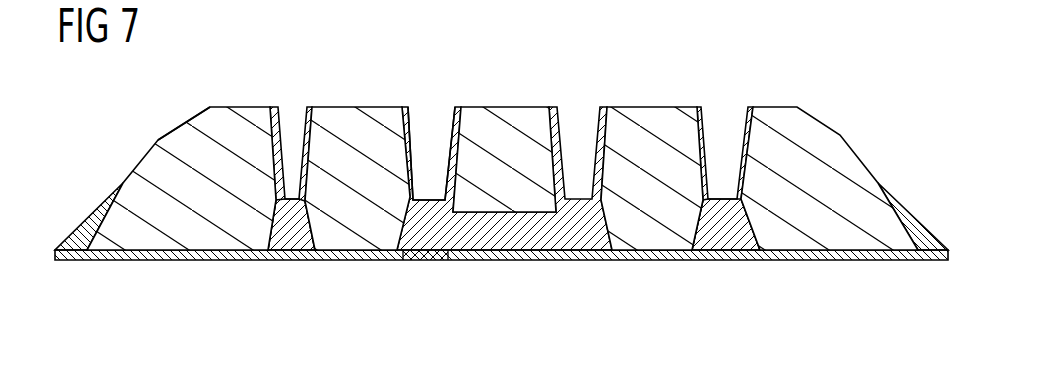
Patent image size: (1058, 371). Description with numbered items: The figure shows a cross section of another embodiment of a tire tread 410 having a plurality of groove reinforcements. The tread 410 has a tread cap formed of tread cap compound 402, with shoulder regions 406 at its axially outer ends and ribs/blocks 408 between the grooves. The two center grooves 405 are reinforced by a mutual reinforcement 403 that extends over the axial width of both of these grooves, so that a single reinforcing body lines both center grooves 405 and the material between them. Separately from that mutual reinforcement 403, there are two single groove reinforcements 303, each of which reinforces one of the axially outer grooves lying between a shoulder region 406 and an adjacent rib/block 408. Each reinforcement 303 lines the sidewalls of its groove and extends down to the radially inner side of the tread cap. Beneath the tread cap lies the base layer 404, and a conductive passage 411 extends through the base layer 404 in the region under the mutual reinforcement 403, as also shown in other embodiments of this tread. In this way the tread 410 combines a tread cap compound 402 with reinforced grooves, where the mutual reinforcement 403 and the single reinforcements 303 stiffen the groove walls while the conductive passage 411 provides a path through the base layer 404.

The tread cap compound 402 is at (238, 132).
The ribs/blocks 408 is at (355, 132).
The tread 410 is at (493, 108).
The center grooves 405 is at (433, 200).
The shoulder regions 406 is at (158, 140).
The groove reinforcements 303 is at (295, 240).
The conductive passage 411 is at (432, 262).
The mutual reinforcement 403 is at (533, 242).
The base layer 404 is at (807, 260).